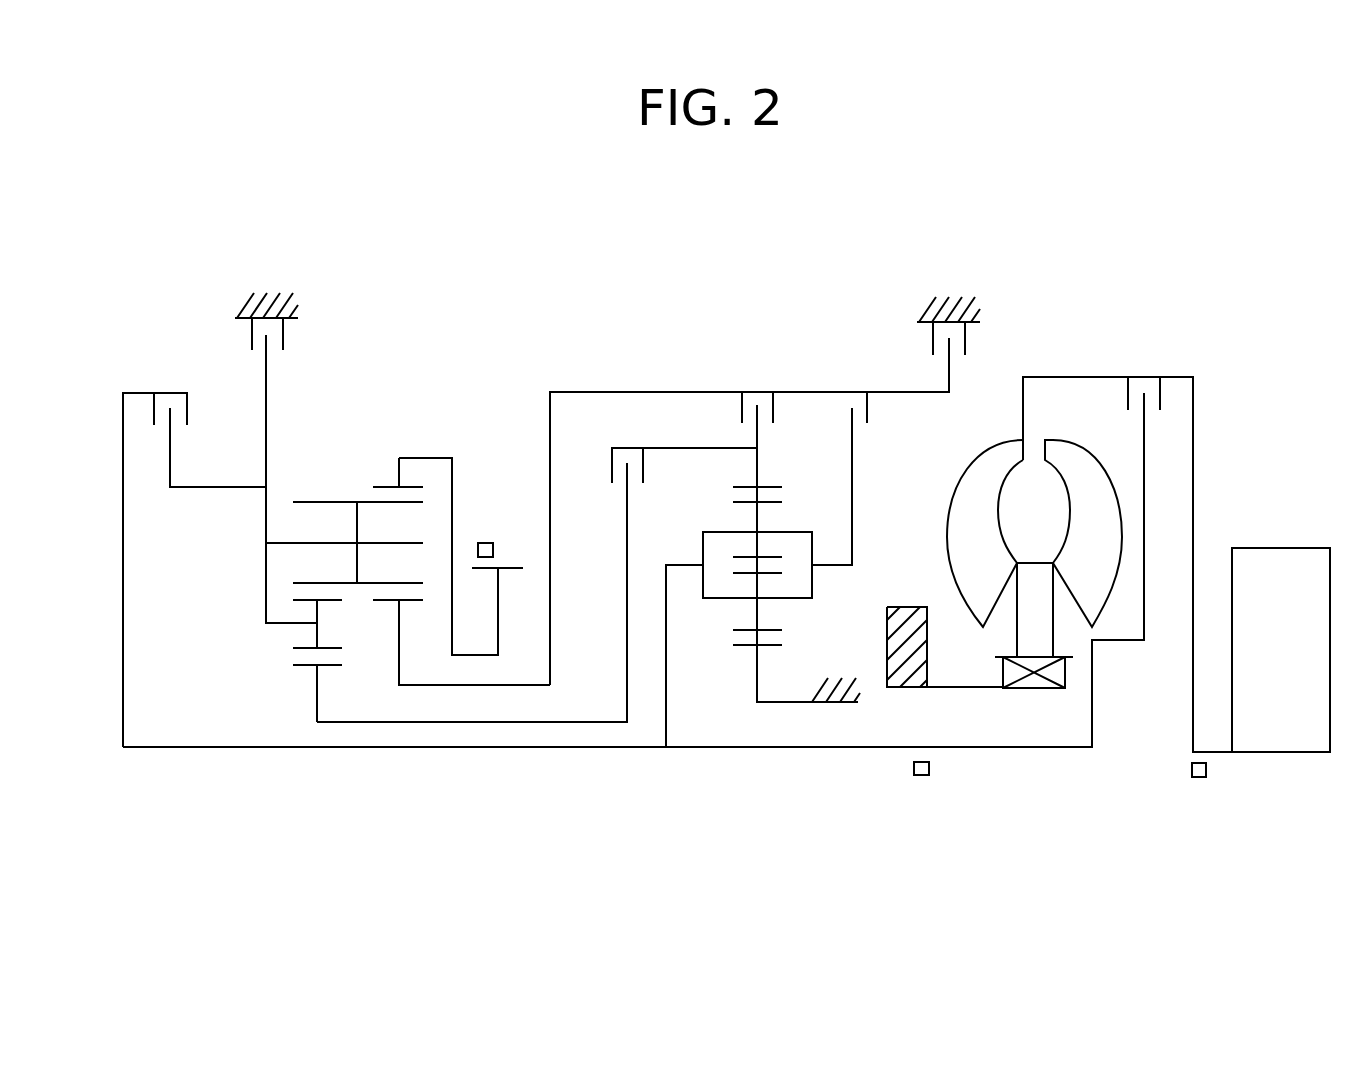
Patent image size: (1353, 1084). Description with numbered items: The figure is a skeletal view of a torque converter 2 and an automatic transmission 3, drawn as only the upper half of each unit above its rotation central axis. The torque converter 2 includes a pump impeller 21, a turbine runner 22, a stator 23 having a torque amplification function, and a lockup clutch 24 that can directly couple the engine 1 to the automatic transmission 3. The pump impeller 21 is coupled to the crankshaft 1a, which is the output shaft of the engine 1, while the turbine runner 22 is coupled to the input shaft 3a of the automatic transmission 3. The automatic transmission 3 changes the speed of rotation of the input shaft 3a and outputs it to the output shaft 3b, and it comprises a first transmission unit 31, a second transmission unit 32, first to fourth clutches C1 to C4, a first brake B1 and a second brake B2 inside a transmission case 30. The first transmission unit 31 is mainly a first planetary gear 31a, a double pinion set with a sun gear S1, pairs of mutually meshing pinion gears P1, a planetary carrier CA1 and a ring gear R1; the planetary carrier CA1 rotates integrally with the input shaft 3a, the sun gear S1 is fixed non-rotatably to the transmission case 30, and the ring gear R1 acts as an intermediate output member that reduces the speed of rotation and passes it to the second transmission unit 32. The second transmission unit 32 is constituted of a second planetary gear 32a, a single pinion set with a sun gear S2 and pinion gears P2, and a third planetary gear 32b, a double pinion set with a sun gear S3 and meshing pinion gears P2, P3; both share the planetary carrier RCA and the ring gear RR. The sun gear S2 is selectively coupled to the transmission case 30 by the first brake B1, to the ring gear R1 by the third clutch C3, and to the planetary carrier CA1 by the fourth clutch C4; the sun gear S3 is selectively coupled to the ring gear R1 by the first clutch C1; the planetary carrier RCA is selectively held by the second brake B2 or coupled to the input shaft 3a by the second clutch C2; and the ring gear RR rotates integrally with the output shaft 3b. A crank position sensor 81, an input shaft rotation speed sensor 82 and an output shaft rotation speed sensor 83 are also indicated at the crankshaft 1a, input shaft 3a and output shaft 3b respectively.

The engine 1 is at (1285, 548).
The crankshaft 1a is at (1222, 753).
The torque converter 2 is at (1092, 358).
The pump impeller 21 is at (977, 460).
The turbine runner 22 is at (1088, 457).
The stator 23 is at (1035, 558).
The lockup clutch 24 is at (1163, 358).
The automatic transmission 3 is at (737, 305).
The input shaft 3a is at (795, 748).
The output shaft 3b is at (512, 567).
The transmission case 30 is at (288, 320).
The first transmission unit 31 is at (805, 358).
The first planetary gear 31a is at (707, 690).
The second transmission unit 32 is at (490, 356).
The second planetary gear 32a is at (402, 709).
The third planetary gear 32b is at (297, 709).
The crank position sensor 81 is at (1188, 772).
The input shaft rotation speed sensor 82 is at (922, 777).
The output shaft rotation speed sensor 83 is at (485, 542).
The first brake B1 is at (930, 340).
The second brake B2 is at (250, 338).
The first clutch C1 is at (612, 465).
The second clutch C2 is at (153, 410).
The third clutch C3 is at (740, 407).
The fourth clutch C4 is at (870, 408).
The sun gear S1 is at (743, 650).
The pinion gears P1 is at (773, 502).
The ring gear R1 is at (742, 490).
The planetary carrier CA1 is at (812, 587).
The sun gear S2 is at (433, 597).
The pinion gears P2 is at (367, 583).
The sun gear S3 is at (305, 662).
The pinion gears P3 is at (305, 597).
The ring gear RR is at (387, 488).
The planetary carrier RCA is at (266, 570).